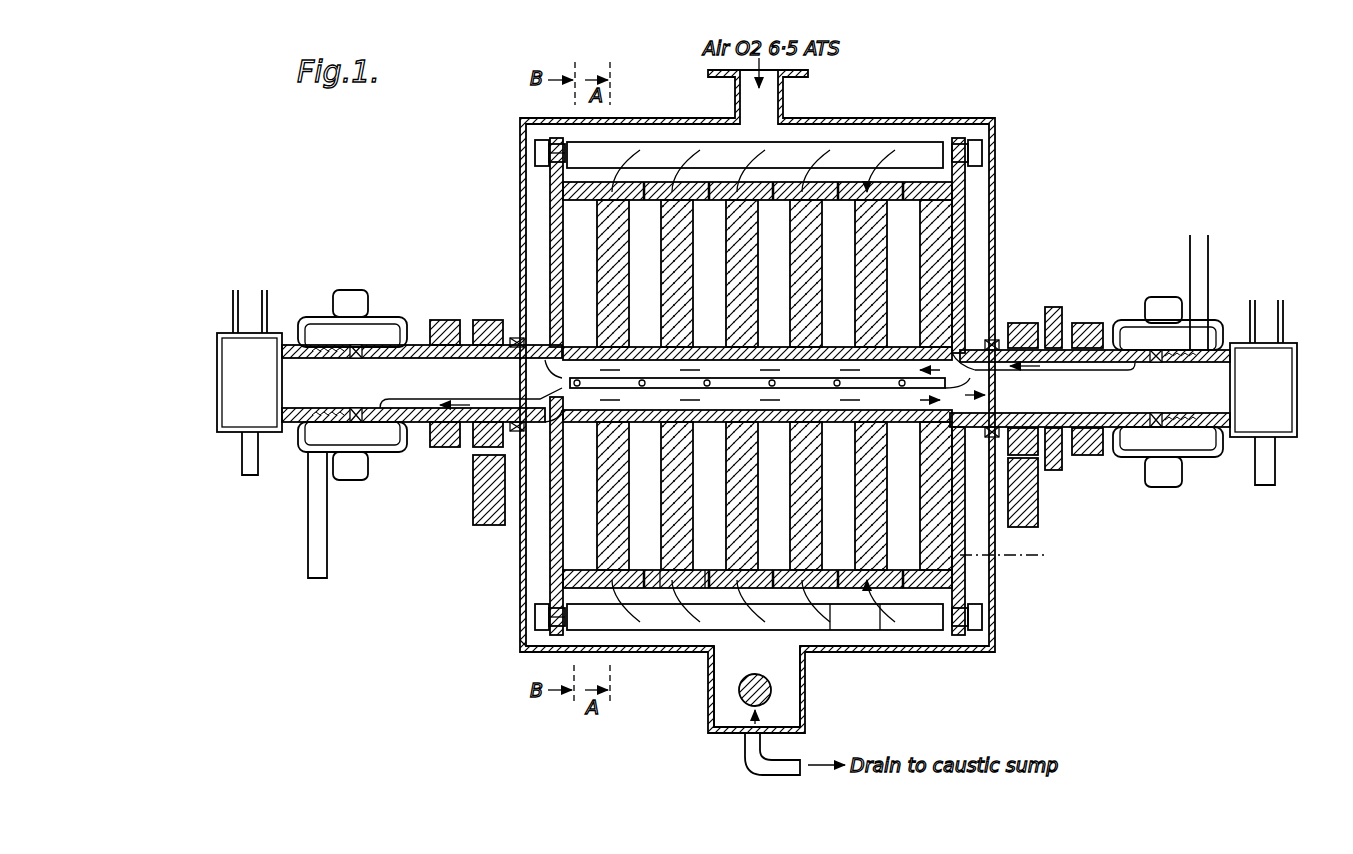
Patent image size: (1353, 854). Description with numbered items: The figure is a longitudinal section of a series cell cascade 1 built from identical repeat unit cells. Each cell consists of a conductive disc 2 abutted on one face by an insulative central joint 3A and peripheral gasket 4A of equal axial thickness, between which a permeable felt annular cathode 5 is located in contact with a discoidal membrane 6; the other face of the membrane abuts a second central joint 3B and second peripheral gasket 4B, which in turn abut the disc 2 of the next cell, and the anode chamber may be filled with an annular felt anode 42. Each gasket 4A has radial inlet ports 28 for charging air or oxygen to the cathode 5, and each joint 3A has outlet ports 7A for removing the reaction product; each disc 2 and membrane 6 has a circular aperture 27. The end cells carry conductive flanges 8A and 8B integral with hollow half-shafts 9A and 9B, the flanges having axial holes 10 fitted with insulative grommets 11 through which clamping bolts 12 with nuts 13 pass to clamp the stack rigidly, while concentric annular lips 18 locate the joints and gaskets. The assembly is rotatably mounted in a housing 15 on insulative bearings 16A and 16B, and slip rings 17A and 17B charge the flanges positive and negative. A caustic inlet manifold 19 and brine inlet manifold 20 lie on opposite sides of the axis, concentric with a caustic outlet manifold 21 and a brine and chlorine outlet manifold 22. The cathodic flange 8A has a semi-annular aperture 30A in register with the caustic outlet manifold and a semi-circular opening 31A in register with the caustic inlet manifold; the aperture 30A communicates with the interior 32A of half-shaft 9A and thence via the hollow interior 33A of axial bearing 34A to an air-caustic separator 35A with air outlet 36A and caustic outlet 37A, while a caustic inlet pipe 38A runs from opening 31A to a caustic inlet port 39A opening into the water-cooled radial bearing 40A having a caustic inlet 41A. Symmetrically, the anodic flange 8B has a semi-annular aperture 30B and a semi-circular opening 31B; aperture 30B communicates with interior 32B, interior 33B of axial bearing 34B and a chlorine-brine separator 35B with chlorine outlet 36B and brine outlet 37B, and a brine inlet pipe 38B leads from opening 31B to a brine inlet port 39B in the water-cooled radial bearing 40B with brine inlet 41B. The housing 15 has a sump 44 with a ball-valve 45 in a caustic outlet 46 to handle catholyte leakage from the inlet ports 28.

The series cell cascade 1 is at (537, 133).
The conductive disc 2 is at (612, 262).
The central joint 3A is at (600, 340).
The second central joint 3B is at (600, 440).
The peripheral gasket 4A is at (552, 592).
The second peripheral gasket 4B is at (630, 588).
The annular cathode 5 is at (600, 232).
The discoidal membrane 6 is at (556, 240).
The outlet ports 7A is at (690, 400).
The cathodic conductive flange 8A is at (982, 200).
The anodic conductive flange 8B is at (556, 318).
The hollow half-shaft 9A is at (1030, 460).
The hollow half-shaft 9B is at (485, 455).
The axial holes 10 is at (540, 618).
The insulative grommet 11 is at (524, 652).
The clamping bolts 12 is at (942, 148).
The nuts 13 is at (978, 140).
The housing 15 is at (900, 118).
The insulative bearing 16A is at (1022, 323).
The insulative bearing 16B is at (490, 320).
The slip ring 17A is at (1052, 307).
The slip ring 17B is at (445, 320).
The concentric annular lips 18 is at (830, 205).
The caustic inlet manifold 19 is at (882, 588).
The brine inlet manifold 20 is at (840, 588).
The caustic outlet manifold 21 is at (660, 400).
The brine and chlorine outlet manifold 22 is at (715, 370).
The circular aperture 27 is at (700, 422).
The radial inlet ports 28 is at (685, 588).
The semi-annular aperture 30A is at (968, 385).
The semi-annular aperture 30B is at (553, 400).
The semi-circular opening 31A is at (960, 358).
The semi-circular opening 31B is at (555, 408).
The interior of hollow half-shaft 32A is at (1020, 380).
The interior of hollow half-shaft 32B is at (470, 389).
The hollow interior of axial bearing 33A is at (1200, 396).
The hollow interior of axial bearing 33B is at (380, 389).
The axial bearing 34A is at (1165, 487).
The axial bearing 34B is at (348, 480).
The air-caustic separator 35A is at (1285, 396).
The chlorine-brine separator 35B is at (270, 397).
The air outlet 36A is at (1266, 295).
The chlorine outlet 36B is at (250, 287).
The caustic outlet 37A is at (1266, 495).
The brine outlet 37B is at (250, 488).
The caustic inlet pipe 38A is at (1085, 323).
The brine inlet pipe 38B is at (500, 450).
The caustic inlet port 39A is at (1162, 297).
The brine inlet port 39B is at (352, 305).
The water cooled radial bearing 40A is at (1130, 457).
The water-cooled radial bearing 40B is at (392, 317).
The caustic inlet 41A is at (1199, 230).
The brine inlet 41B is at (316, 592).
The annular felt anode 42 is at (1017, 555).
The sump 44 is at (800, 732).
The ball-valve 45 is at (740, 690).
The caustic outlet 46 is at (745, 757).